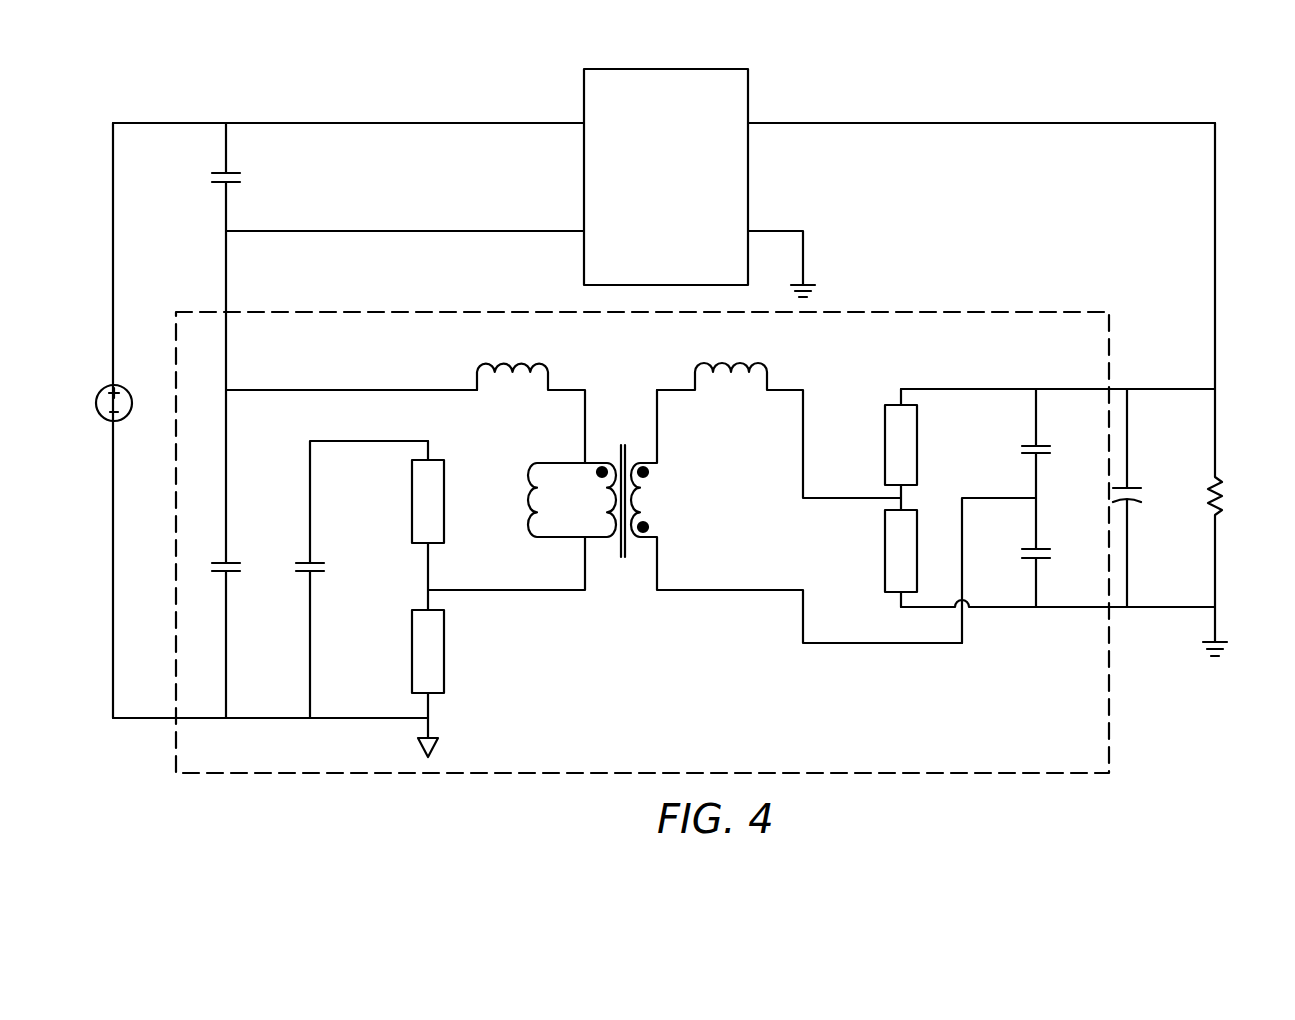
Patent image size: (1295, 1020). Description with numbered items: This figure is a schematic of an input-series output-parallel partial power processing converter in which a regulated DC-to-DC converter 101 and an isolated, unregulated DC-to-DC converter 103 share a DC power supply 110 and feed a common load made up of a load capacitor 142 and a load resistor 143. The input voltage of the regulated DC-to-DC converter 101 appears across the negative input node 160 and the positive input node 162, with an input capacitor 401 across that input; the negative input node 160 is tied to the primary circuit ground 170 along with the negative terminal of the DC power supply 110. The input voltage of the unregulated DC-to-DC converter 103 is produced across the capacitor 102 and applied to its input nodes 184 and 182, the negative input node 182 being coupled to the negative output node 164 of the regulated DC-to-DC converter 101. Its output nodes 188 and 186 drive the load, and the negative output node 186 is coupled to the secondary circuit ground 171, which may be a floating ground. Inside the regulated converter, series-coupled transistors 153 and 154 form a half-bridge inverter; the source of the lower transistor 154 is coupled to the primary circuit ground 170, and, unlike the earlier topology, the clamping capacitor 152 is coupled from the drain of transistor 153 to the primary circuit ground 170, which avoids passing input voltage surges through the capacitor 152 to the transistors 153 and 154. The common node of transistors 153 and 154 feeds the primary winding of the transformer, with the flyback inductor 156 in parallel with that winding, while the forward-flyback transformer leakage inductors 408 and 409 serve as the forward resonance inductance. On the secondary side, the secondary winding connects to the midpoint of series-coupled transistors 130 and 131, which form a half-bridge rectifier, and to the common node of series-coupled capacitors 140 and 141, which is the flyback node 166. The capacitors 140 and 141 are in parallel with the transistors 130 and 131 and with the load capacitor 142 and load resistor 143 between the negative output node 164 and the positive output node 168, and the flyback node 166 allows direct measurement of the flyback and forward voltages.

The regulated DC-to-DC converter 101 is at (952, 311).
The capacitor 102 is at (232, 183).
The isolated (unregulated) DC-to-DC converter 103 is at (740, 68).
The DC power supply 110 is at (107, 383).
The transistor 130 is at (918, 433).
The transistor 131 is at (925, 507).
The capacitor 140 is at (1045, 443).
The capacitor 141 is at (1045, 548).
The load capacitor 142 is at (1140, 487).
The load resistor 143 is at (1222, 481).
The clamping capacitor 152 is at (318, 562).
The transistor 153 is at (445, 523).
The transistor 154 is at (445, 664).
The flyback inductor (first inductor) 156 is at (550, 462).
The negative input node 160 is at (197, 719).
The positive input node 162 is at (228, 350).
The negative output node 164 is at (1086, 608).
The flyback node 166 is at (982, 497).
The positive output node 168 is at (1073, 388).
The primary circuit ground 170 is at (440, 743).
The secondary circuit ground 171 is at (808, 283).
The negative input node 182 is at (533, 230).
The positive input node 184 is at (533, 122).
The negative output node 186 is at (752, 230).
The positive output node 188 is at (752, 122).
The input capacitor 401 is at (240, 558).
The transformer leakage inductor 408 is at (548, 366).
The transformer leakage inductor 409 is at (767, 366).